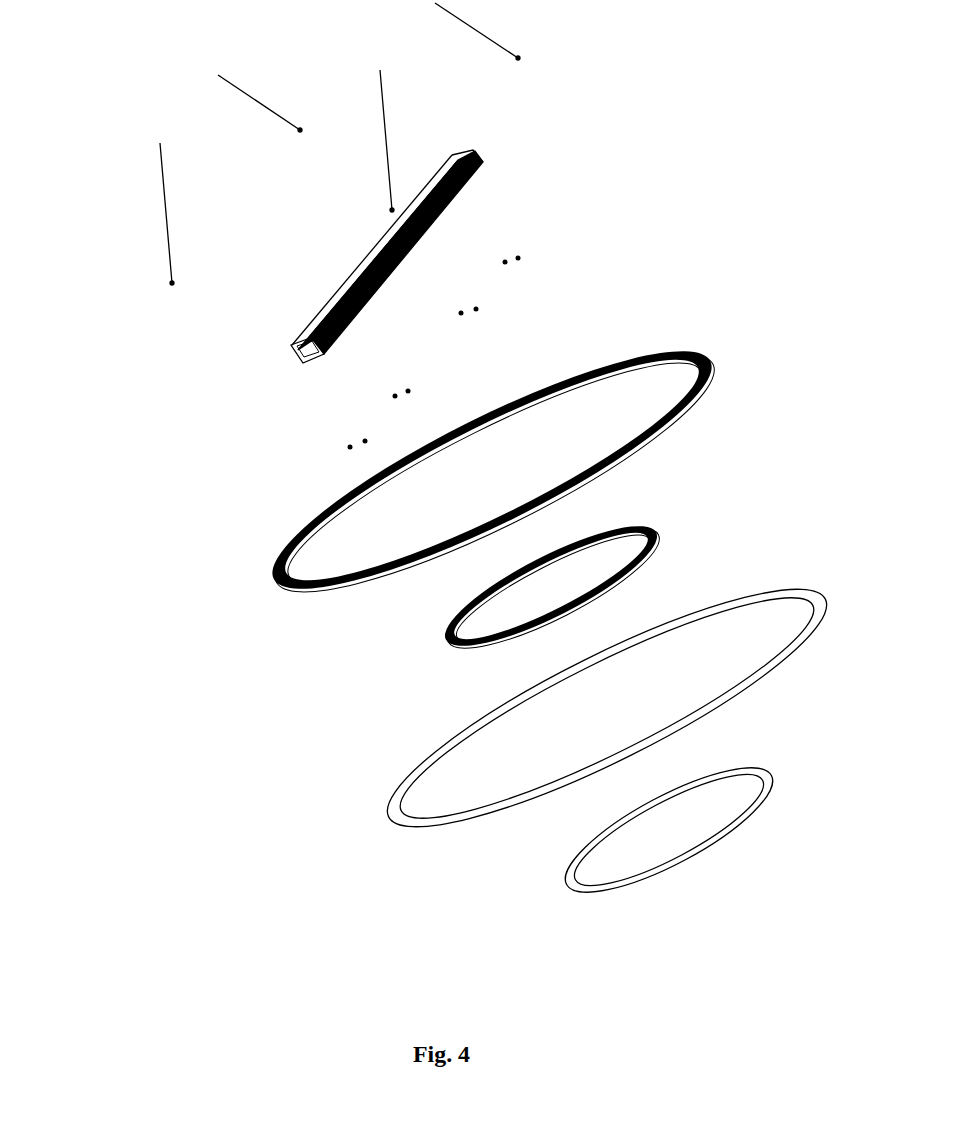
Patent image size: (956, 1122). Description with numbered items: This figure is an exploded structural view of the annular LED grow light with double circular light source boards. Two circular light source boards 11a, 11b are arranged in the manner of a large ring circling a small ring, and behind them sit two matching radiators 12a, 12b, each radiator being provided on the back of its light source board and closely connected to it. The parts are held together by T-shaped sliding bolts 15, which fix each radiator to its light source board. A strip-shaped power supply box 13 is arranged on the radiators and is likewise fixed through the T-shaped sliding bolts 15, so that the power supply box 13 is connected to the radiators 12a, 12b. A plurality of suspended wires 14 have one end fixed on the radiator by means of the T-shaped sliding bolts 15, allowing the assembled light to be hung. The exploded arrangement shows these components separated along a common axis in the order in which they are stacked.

The suspended wires 14 is at (161, 207).
The power supply box 13 is at (338, 303).
The T-shaped sliding bolt 15 is at (393, 397).
The radiator 12b is at (280, 542).
The radiator 12a is at (445, 627).
The circular light source board 11b is at (407, 785).
The circular light source board 11a is at (580, 878).